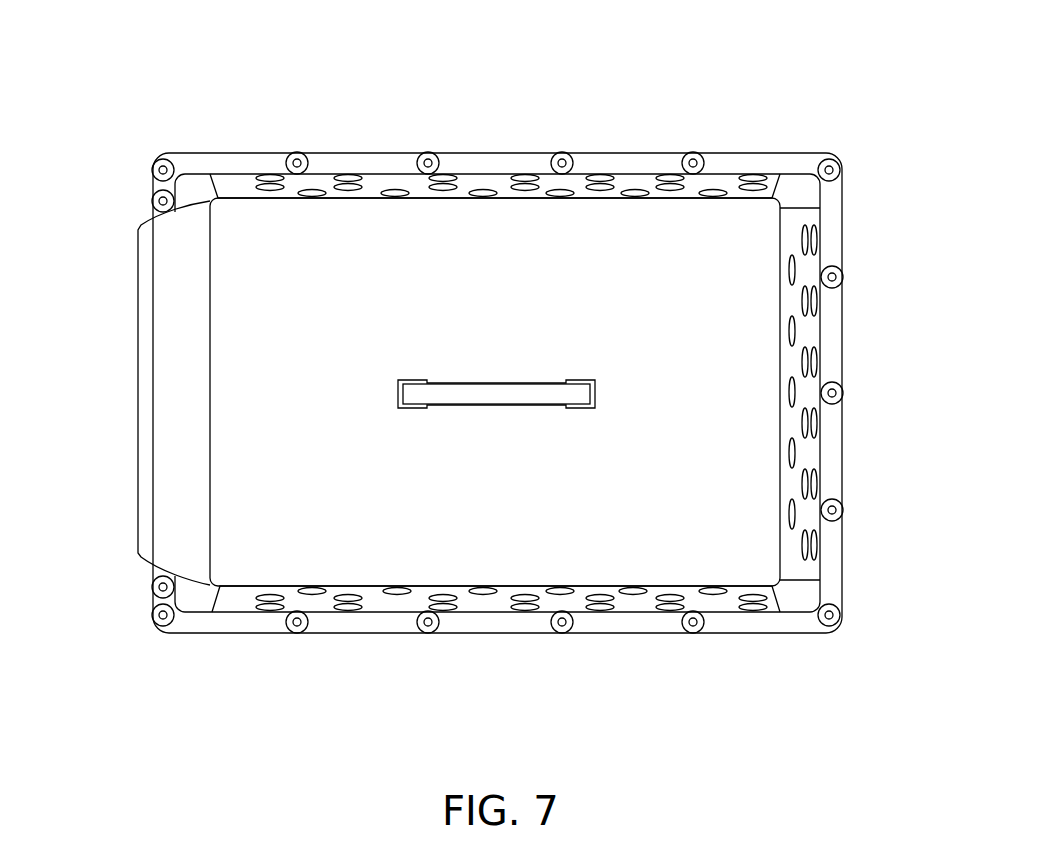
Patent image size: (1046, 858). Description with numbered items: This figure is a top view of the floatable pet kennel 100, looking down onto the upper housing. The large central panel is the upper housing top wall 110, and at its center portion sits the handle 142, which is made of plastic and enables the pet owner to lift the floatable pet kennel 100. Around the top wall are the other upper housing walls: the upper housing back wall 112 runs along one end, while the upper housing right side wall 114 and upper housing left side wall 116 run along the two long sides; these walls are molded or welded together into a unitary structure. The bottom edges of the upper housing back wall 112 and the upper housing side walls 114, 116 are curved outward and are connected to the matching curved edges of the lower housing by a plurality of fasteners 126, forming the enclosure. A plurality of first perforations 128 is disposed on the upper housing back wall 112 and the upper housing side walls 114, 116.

The floatable pet kennel 100 is at (160, 68).
The upper housing top wall 110 is at (748, 231).
The upper housing back wall 112 is at (810, 330).
The upper housing right side wall 114 is at (392, 604).
The upper housing left side wall 116 is at (487, 180).
The fasteners 126 is at (828, 620).
The first perforations 128 is at (637, 195).
The handle 142 is at (497, 380).